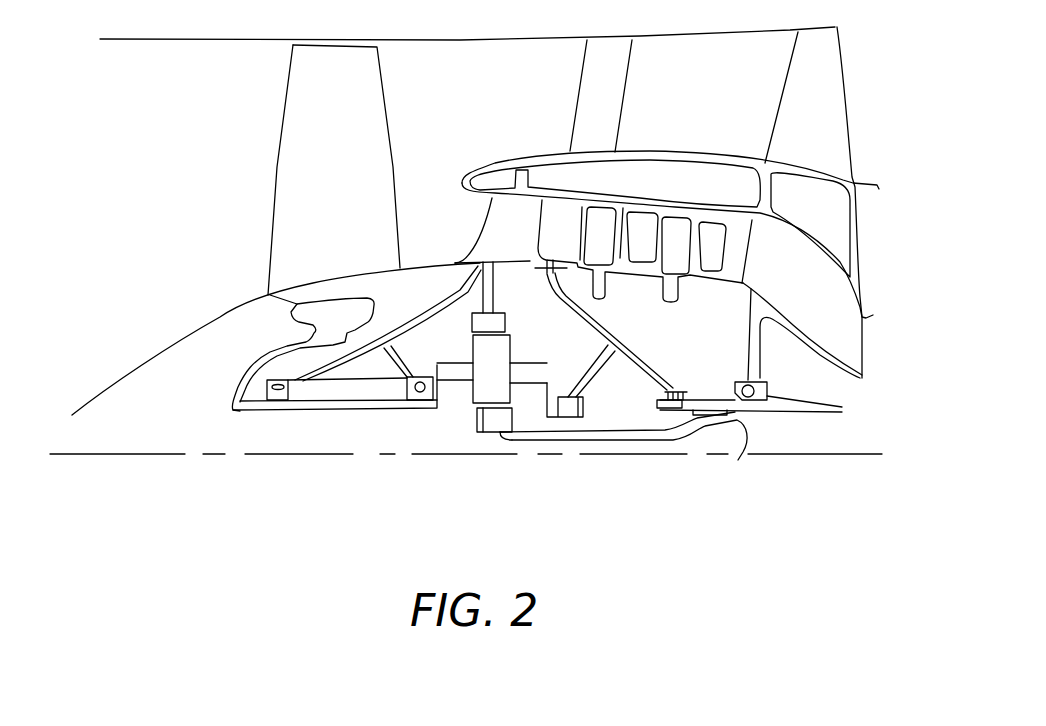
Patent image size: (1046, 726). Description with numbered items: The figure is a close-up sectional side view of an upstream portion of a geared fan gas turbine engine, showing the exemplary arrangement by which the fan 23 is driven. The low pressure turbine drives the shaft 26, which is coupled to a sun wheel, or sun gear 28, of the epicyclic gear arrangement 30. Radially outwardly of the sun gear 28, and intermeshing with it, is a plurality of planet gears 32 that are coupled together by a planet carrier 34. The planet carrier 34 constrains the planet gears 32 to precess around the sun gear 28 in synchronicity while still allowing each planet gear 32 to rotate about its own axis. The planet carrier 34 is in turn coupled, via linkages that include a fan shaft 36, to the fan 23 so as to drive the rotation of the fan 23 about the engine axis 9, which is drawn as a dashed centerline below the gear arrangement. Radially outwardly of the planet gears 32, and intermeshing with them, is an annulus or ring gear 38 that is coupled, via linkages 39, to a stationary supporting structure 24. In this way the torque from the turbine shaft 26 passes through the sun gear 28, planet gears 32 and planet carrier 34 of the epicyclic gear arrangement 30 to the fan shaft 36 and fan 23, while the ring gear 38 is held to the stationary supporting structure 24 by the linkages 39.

The engine axis 9 is at (165, 455).
The fan 23 is at (307, 170).
The stationary supporting structure 24 is at (496, 220).
The shaft 26 is at (617, 437).
The sun gear 28 is at (493, 422).
The epicyclic gear arrangement 30 is at (480, 393).
The planet gears 32 is at (478, 408).
The planet carrier 34 is at (540, 393).
The fan shaft 36 is at (460, 404).
The ring gear 38 is at (497, 322).
The linkages 39 is at (497, 293).